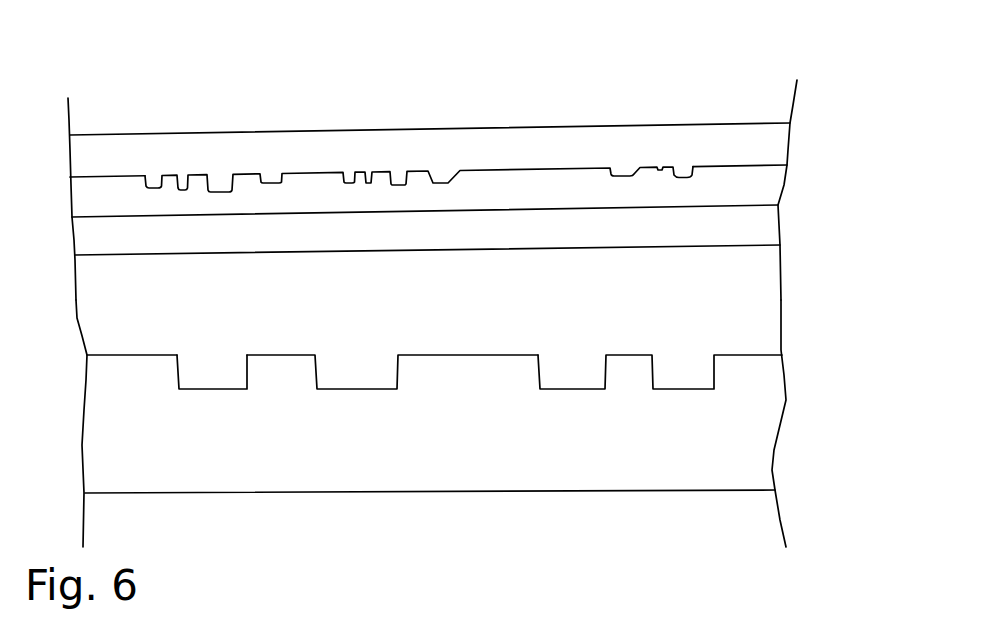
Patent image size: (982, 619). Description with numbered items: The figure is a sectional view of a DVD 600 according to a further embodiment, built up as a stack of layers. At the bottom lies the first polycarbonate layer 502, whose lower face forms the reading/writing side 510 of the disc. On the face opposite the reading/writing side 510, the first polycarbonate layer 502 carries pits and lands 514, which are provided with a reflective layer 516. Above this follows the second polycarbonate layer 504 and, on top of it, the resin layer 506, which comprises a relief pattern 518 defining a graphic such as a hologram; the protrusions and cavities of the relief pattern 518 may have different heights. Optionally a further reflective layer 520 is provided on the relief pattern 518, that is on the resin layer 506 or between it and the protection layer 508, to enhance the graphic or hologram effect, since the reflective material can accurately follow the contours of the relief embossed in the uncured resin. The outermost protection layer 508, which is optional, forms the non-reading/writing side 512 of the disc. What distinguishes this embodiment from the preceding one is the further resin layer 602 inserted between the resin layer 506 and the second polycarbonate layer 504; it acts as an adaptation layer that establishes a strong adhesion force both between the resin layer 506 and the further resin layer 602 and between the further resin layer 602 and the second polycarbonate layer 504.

The DVD 600 is at (792, 58).
The first polycarbonate layer 502 is at (734, 437).
The second polycarbonate layer 504 is at (740, 298).
The resin layer 506 is at (754, 185).
The protection layer 508 is at (757, 147).
The reading/writing side 510 is at (217, 495).
The non-reading/writing side 512 is at (200, 135).
The pits and lands 514 is at (215, 393).
The reflective layer 516 is at (357, 385).
The relief pattern 518 is at (402, 160).
The further reflective layer 520 is at (112, 176).
The further resin layer 602 is at (757, 227).